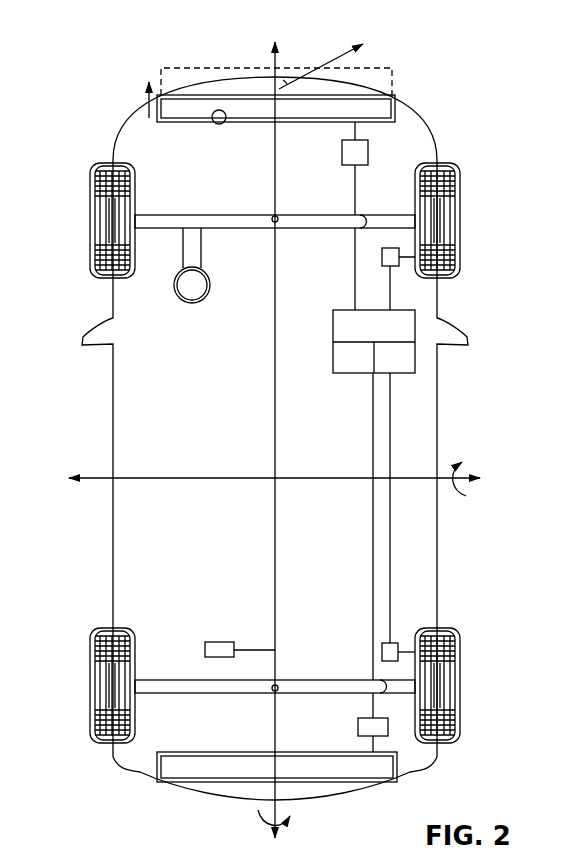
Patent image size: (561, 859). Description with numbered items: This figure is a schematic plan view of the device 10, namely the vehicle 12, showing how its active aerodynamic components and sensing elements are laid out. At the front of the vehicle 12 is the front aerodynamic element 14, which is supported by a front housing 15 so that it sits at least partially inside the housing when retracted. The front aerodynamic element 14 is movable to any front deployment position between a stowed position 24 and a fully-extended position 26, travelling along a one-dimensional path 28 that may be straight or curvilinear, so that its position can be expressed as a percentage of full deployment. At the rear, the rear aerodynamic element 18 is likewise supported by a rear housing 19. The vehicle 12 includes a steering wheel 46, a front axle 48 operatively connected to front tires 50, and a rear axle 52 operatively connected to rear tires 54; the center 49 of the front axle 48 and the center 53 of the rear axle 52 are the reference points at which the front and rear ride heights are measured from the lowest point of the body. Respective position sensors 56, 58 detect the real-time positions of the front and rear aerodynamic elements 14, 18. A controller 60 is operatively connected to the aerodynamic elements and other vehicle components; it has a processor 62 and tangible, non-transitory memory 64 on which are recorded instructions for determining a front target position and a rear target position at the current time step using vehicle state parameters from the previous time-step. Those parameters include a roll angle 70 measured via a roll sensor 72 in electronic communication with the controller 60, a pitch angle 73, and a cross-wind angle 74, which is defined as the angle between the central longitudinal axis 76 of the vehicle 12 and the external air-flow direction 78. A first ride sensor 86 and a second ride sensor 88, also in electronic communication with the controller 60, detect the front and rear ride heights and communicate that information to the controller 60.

The vehicle 10 is at (461, 102).
The vehicle 12 is at (97, 112).
The front aerodynamic element 14 is at (399, 87).
The front housing 15 is at (217, 125).
The rear aerodynamic element 18 is at (393, 776).
The rear housing 19 is at (173, 757).
The stowed position 24 is at (179, 122).
The fully-extended position 26 is at (373, 67).
The one-dimensional path 28 is at (146, 93).
The steering wheel 46 is at (176, 300).
The front axle 48 is at (162, 215).
The center of the front axle 49 is at (280, 216).
The front tires 50 is at (83, 220).
The rear axle 52 is at (159, 680).
The center of the rear axle 53 is at (272, 691).
The rear tires 54 is at (83, 687).
The front position sensor 56 is at (341, 153).
The rear position sensor 58 is at (357, 724).
The controller 60 is at (386, 337).
The processor 62 is at (366, 371).
The memory 64 is at (406, 371).
The roll angle 70 is at (284, 824).
The roll sensor 72 is at (221, 641).
The pitch angle 73 is at (466, 496).
The cross-wind angle 74 is at (284, 85).
The central longitudinal axis 76 is at (270, 62).
The external air-flow direction 78 is at (345, 56).
The first ride sensor 86 is at (388, 268).
The second ride sensor 88 is at (393, 642).